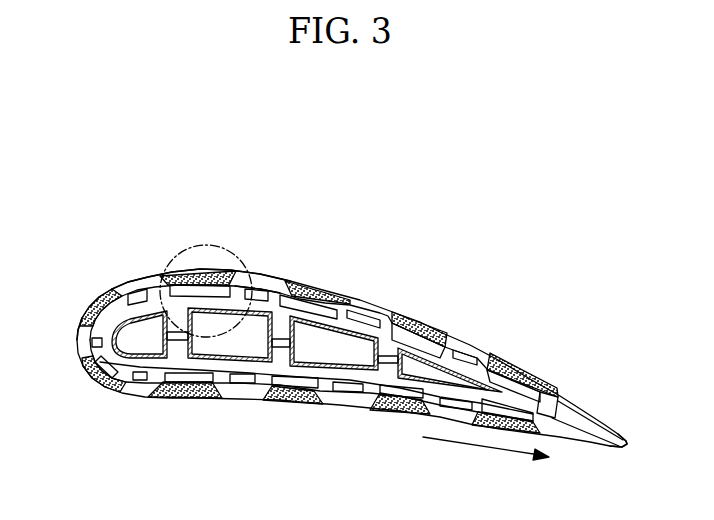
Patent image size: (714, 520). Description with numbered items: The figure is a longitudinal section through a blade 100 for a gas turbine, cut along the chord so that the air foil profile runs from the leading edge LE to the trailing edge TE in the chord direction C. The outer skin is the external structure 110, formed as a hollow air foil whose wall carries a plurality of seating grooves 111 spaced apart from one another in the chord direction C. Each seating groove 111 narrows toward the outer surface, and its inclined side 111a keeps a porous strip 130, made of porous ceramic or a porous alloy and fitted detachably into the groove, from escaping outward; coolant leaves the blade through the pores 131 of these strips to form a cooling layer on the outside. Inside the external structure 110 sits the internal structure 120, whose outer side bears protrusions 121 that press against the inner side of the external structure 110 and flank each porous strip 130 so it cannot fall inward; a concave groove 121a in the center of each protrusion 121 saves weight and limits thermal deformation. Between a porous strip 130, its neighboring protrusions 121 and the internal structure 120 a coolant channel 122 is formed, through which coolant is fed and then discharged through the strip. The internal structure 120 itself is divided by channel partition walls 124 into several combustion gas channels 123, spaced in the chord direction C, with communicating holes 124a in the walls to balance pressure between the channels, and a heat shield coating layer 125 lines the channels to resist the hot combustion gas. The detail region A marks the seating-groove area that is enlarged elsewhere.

The blade 100 is at (520, 296).
The external structure 110 is at (146, 388).
The seating groove 111 is at (195, 262).
The inclined side 111a is at (256, 292).
The internal structure 120 is at (245, 366).
The protrusion 121 is at (252, 290).
The concave groove 121a is at (287, 295).
The coolant channel 122 is at (162, 280).
The combustion gas channel 123 is at (99, 383).
The channel partition wall 124 is at (284, 360).
The communicating hole 124a is at (395, 380).
The heat shield coating layer 125 is at (125, 342).
The porous strip 130 is at (170, 400).
The pore 131 is at (209, 399).
The detail region A is at (172, 250).
The leading edge LE is at (64, 328).
The trailing edge TE is at (638, 452).
The chord direction C is at (508, 454).